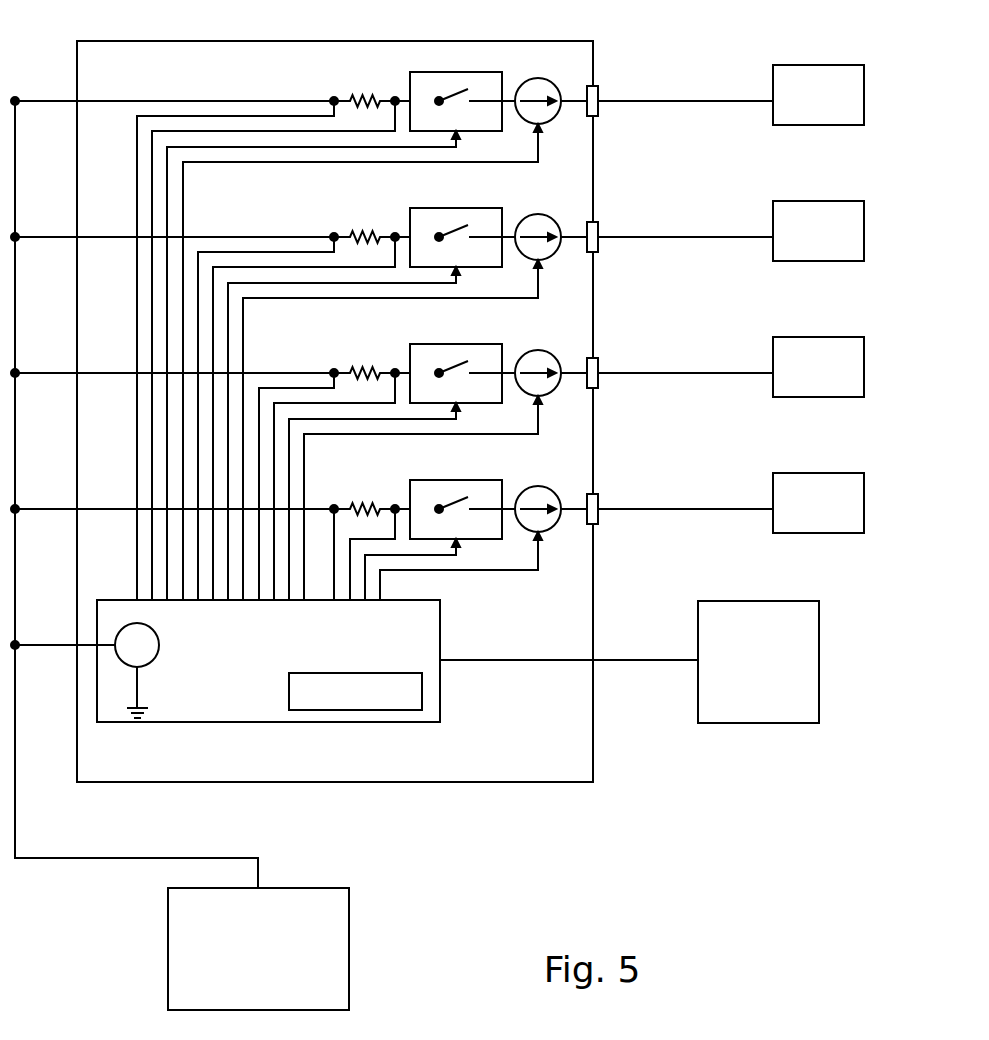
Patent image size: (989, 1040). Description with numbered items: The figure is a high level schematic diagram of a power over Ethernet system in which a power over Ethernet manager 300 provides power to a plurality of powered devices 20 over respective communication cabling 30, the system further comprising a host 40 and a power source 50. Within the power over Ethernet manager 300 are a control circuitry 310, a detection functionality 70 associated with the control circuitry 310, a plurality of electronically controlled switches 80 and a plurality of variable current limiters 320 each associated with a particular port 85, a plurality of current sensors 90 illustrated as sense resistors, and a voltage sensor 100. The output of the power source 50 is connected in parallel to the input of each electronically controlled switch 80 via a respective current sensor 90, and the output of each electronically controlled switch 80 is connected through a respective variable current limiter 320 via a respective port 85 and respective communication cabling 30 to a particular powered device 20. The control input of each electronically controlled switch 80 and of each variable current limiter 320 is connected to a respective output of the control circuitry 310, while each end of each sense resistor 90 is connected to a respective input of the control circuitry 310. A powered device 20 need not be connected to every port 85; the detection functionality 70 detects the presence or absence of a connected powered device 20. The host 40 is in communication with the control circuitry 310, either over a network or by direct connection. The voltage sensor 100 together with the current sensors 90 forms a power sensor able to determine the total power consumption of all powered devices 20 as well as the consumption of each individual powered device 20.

The powered device 20 is at (804, 63).
The communication cabling 30 is at (652, 98).
The host 40 is at (773, 599).
The power source 50 is at (288, 887).
The detection functionality 70 is at (423, 686).
The electronically controlled switch 80 is at (503, 78).
The port 85 is at (598, 110).
The current sensor 90 is at (370, 87).
The voltage sensor 100 is at (160, 650).
The power over Ethernet manager 300 is at (472, 783).
The control circuitry 310 is at (442, 623).
The variable current limiter 320 is at (547, 118).